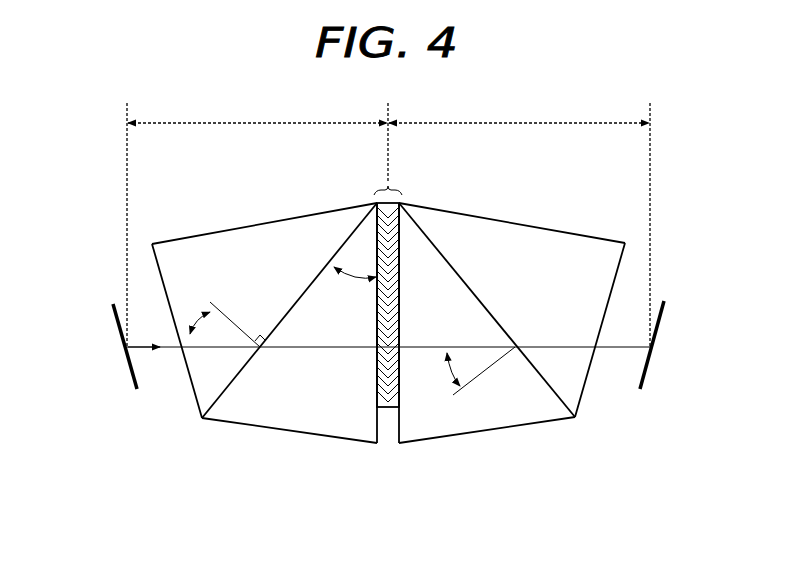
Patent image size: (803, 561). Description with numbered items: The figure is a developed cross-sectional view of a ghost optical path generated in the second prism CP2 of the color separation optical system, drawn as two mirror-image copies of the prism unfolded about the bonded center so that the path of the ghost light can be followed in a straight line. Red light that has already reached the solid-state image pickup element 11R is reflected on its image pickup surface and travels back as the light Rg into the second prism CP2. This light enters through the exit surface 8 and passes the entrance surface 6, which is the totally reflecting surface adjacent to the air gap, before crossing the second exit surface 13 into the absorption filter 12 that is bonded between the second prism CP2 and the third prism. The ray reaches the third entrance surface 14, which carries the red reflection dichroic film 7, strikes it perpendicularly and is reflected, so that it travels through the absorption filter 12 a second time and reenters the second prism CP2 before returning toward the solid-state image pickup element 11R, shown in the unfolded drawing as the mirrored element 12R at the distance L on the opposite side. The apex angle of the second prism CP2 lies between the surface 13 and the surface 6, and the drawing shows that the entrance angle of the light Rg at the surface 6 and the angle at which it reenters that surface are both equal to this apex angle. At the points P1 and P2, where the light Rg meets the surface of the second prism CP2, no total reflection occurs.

The distance from center to reflecting mirror L is at (388, 222).
The light reflected on the solid-state image pickup element Rg is at (142, 350).
The solid-state image pickup element for the red component 11R is at (128, 376).
The second reflecting mirror 12R is at (647, 375).
The second exit surface 13 is at (377, 245).
The exit surface 8 is at (191, 384).
The second entrance surface 6 is at (223, 394).
The second prism CP2 is at (310, 433).
The red reflection dichroic film 7 is at (437, 282).
The third entrance surface 14 is at (402, 228).
The absorption filter 12 is at (380, 183).
The entrance point of the light Rg into the second prism surface P1 is at (264, 352).
The entrance point of the light Rg into the second prism surface P2 is at (516, 345).